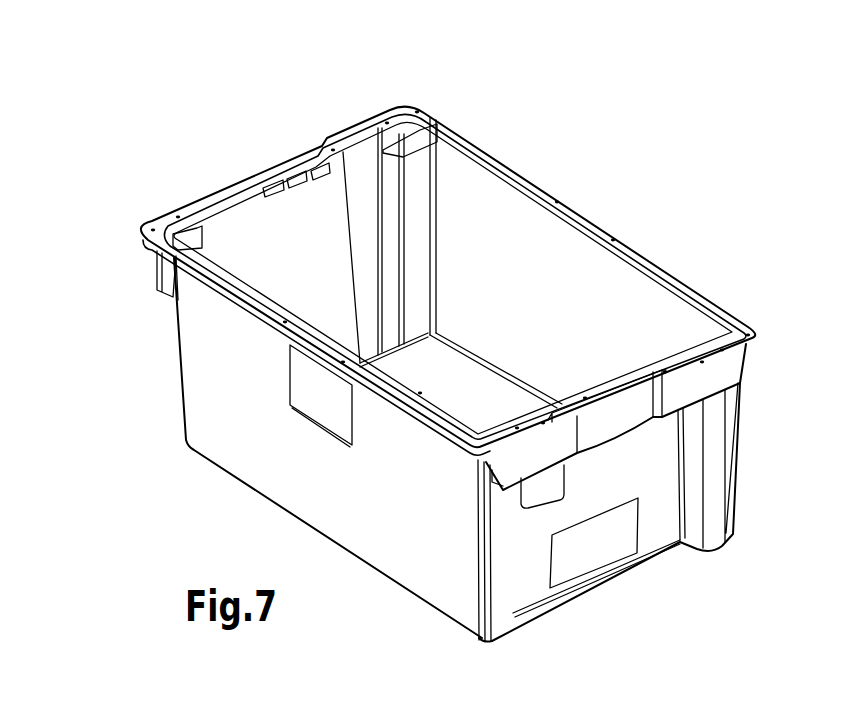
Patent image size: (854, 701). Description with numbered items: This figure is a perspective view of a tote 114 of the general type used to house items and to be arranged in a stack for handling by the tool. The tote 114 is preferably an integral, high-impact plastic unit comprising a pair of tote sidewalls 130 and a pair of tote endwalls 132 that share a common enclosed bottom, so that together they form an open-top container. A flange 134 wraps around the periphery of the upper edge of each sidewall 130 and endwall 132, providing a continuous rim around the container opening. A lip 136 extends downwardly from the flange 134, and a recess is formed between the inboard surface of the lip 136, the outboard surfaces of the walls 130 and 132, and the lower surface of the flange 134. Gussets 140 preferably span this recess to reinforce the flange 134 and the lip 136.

The tote 114 is at (403, 354).
The tote sidewall 130 is at (260, 440).
The tote endwall 132 is at (653, 528).
The flange 134 is at (497, 157).
The lip 136 is at (220, 292).
The gusset 140 is at (177, 257).